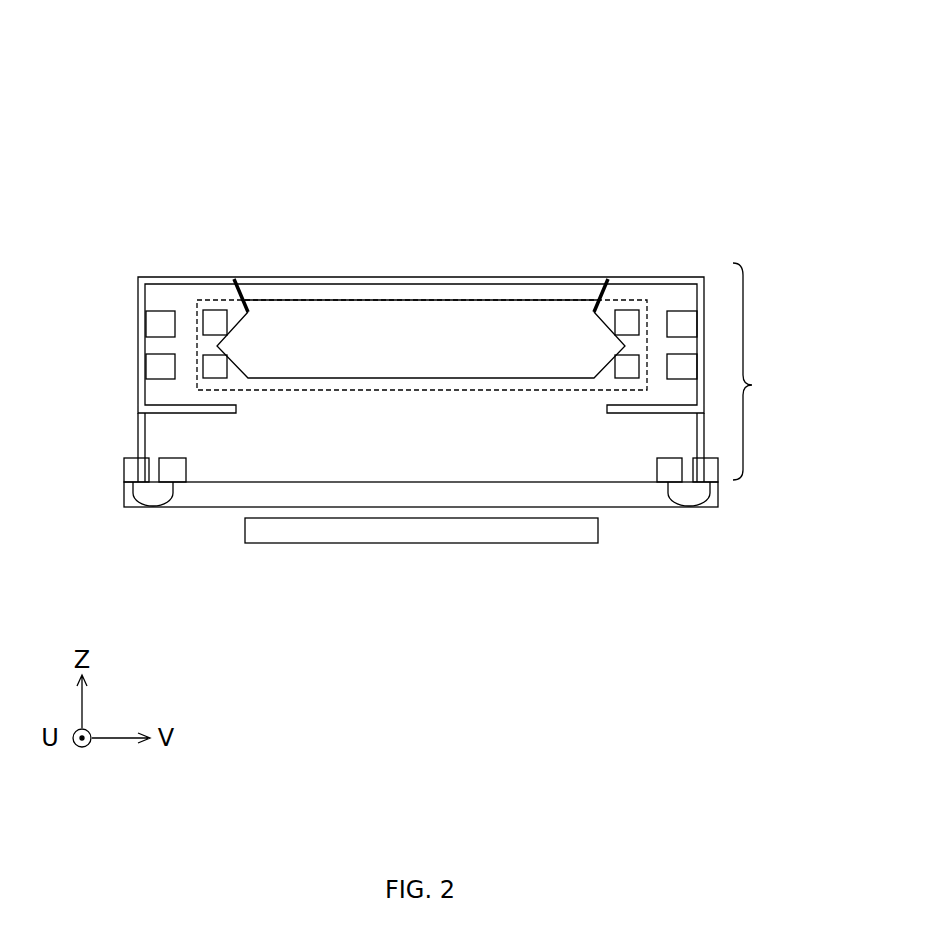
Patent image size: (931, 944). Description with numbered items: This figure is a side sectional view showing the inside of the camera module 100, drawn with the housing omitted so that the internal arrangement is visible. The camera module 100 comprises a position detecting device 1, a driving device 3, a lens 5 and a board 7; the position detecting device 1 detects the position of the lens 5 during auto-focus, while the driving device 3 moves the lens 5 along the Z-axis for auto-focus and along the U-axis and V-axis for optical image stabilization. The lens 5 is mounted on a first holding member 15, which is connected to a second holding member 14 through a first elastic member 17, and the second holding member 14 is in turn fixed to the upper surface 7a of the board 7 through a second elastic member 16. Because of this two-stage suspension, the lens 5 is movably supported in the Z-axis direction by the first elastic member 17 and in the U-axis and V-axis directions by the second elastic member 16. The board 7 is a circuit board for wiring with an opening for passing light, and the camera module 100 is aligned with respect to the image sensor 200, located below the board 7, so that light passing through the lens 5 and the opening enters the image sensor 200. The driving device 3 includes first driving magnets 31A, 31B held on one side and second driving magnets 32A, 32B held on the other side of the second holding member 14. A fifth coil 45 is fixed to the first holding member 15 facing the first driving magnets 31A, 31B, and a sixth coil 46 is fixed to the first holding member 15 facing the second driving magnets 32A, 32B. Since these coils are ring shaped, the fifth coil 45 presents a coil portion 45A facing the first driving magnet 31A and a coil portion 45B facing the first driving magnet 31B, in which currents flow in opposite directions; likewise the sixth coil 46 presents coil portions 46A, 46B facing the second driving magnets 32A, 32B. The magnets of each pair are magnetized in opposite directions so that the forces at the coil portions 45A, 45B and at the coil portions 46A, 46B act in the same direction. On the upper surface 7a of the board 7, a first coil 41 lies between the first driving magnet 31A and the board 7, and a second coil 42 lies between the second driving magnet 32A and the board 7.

The camera module 100 is at (418, 105).
The position detecting device 1 is at (767, 371).
The driving device 3 is at (742, 371).
The lens 5 is at (420, 298).
The board 7 is at (718, 492).
The upper surface of board 7a is at (635, 480).
The second holding member 14 is at (147, 288).
The first holding member 15 is at (305, 298).
The second elastic member 16 is at (138, 440).
The first elastic member 17 is at (243, 292).
The first driving magnet 31A is at (138, 368).
The first driving magnet 31B is at (138, 324).
The second driving magnet 32A is at (704, 368).
The second driving magnet 32B is at (704, 323).
The first coil 41 is at (162, 507).
The second coil 42 is at (702, 507).
The fifth coil 45 is at (210, 251).
The coil portion 45A is at (207, 310).
The coil portion 45B is at (208, 355).
The sixth coil 46 is at (633, 251).
The coil portion 46A is at (630, 355).
The coil portion 46B is at (622, 310).
The image sensor 200 is at (422, 543).